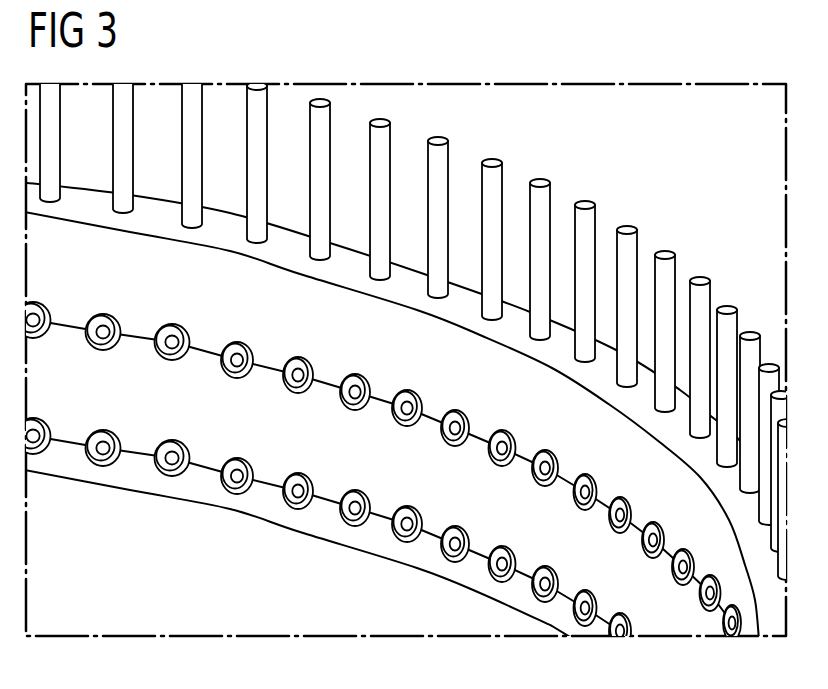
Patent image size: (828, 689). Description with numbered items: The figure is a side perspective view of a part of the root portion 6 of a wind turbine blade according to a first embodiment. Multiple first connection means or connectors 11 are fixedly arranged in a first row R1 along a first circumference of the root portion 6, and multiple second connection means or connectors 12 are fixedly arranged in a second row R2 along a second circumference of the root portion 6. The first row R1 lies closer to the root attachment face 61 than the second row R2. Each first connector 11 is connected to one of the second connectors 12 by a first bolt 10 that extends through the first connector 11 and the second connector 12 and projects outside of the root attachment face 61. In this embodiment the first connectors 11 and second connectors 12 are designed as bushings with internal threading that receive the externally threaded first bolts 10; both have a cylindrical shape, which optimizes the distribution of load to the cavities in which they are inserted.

The root portion 6 is at (405, 411).
The root attachment face 61 is at (343, 260).
The first bolt 10 is at (190, 187).
The first connection means or connector 11 is at (233, 378).
The second connection means or connector 12 is at (237, 494).
The first row R1 is at (379, 446).
The second row R2 is at (340, 519).